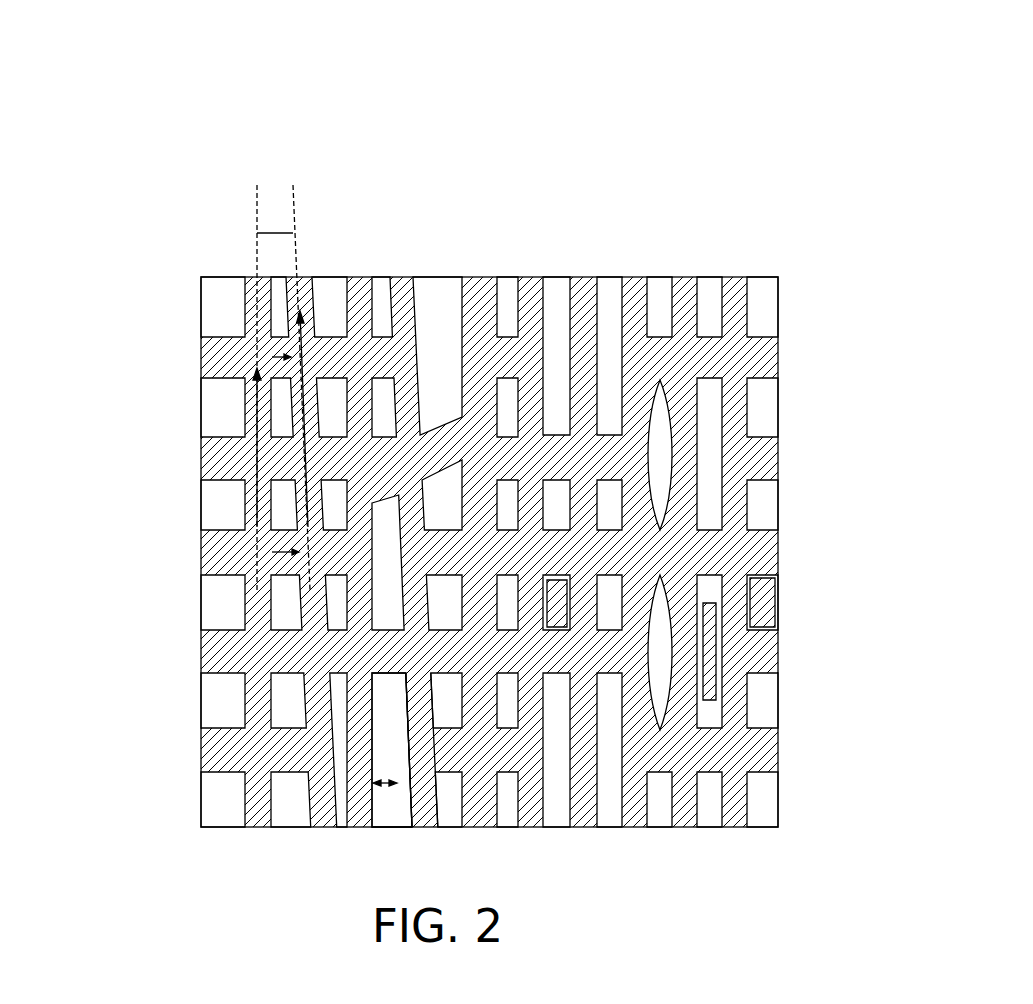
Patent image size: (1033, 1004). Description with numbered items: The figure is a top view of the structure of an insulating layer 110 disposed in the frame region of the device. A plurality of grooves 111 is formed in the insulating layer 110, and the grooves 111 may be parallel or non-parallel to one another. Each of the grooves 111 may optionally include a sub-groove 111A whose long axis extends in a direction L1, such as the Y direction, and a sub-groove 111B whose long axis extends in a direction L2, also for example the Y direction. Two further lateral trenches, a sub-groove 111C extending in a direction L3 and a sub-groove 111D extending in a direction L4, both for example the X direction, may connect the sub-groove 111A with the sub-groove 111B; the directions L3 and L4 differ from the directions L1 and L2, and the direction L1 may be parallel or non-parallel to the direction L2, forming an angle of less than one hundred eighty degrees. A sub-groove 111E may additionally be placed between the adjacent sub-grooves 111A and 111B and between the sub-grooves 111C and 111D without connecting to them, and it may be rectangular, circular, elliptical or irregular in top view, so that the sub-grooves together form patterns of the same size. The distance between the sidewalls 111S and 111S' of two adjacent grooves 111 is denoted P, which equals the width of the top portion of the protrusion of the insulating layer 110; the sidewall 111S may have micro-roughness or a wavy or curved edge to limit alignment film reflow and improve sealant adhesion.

The insulating layer 110 is at (113, 144).
The grooves 111 is at (96, 346).
The sub-groove 111A is at (257, 505).
The sub-groove 111B is at (291, 385).
The sub-groove 111C is at (211, 552).
The sub-groove 111D is at (211, 358).
The sub-groove 111E is at (388, 497).
The sidewall 111S is at (440, 772).
The sidewall 111S' is at (633, 750).
The direction L1 is at (283, 357).
The direction L2 is at (312, 488).
The direction L3 is at (274, 556).
The direction L4 is at (297, 318).
The distance P is at (386, 798).